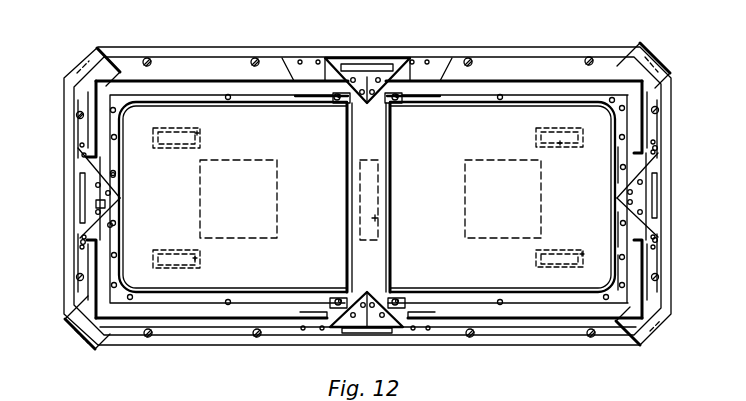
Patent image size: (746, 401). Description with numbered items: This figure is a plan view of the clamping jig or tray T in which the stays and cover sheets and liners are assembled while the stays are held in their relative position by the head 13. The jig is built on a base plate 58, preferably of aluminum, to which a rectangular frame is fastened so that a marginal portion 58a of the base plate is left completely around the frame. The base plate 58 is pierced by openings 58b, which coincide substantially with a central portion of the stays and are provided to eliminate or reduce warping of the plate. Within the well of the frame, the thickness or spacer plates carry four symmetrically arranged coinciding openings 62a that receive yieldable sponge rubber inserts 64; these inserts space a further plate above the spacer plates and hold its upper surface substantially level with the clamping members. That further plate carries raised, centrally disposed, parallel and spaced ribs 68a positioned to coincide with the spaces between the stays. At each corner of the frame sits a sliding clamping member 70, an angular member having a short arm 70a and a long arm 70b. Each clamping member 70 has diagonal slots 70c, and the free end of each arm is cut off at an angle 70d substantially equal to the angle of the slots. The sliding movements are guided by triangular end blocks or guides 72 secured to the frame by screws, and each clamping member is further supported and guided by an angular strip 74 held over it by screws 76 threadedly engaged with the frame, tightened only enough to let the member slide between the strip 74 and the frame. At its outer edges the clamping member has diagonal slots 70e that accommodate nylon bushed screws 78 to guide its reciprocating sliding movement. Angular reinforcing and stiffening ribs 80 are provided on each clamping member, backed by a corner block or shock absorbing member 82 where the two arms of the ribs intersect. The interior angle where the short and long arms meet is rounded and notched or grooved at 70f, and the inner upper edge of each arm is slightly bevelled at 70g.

The base plate 58 is at (443, 196).
The marginal portion 58a is at (492, 47).
The openings 58b is at (262, 238).
The coinciding openings 62a is at (537, 136).
The sponge rubber inserts 64 is at (199, 133).
The ribs 68a is at (388, 170).
The sliding clamping member 70 is at (118, 318).
The short arm 70a is at (634, 265).
The long arm 70b is at (192, 312).
The diagonal slots 70c is at (228, 94).
The angled end 70d is at (125, 210).
The diagonal slots 70e is at (599, 52).
The notched or grooved surface 70f is at (597, 108).
The bevelled inner upper edge 70g is at (123, 199).
The triangular end blocks or guides 72 is at (82, 172).
The angular strip 74 is at (276, 94).
The screws 76 is at (337, 100).
The nylon bushed screws 78 is at (147, 58).
The angular reinforcing and stiffening ribs 80 is at (93, 118).
The corner block or shock absorbing member 82 is at (97, 47).
The head 13 is at (60, 97).
The clamping jig or tray T is at (48, 229).